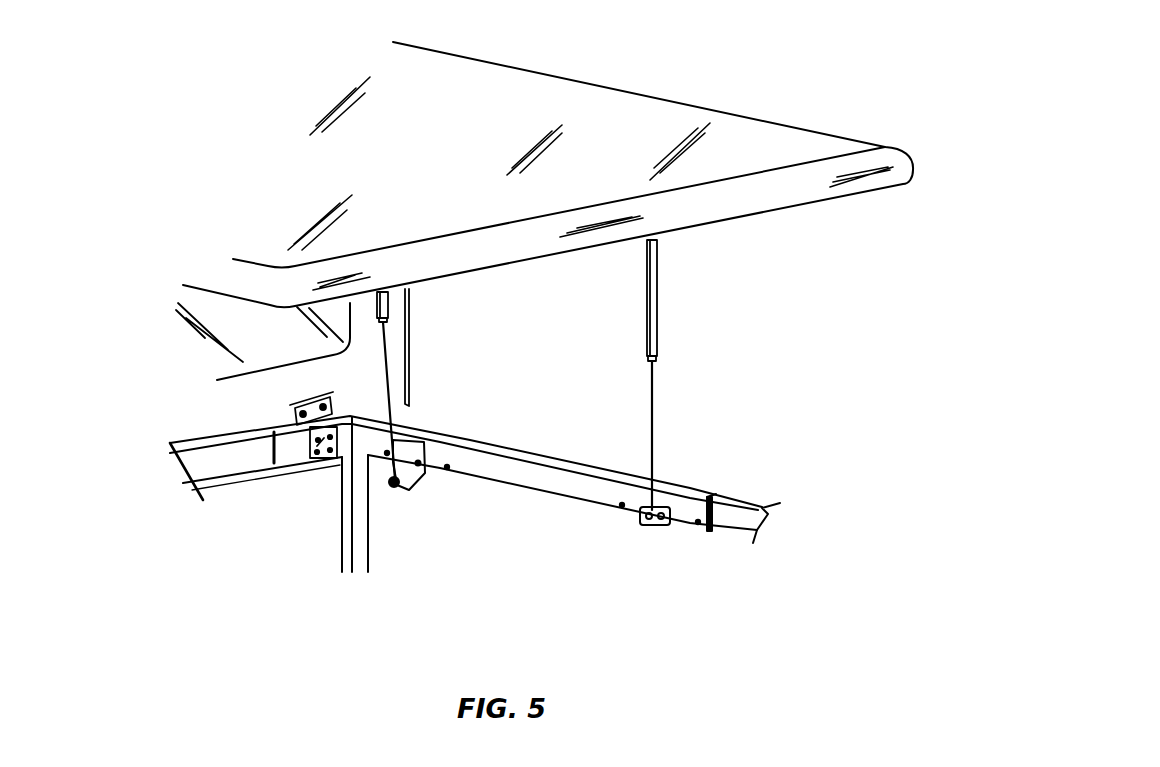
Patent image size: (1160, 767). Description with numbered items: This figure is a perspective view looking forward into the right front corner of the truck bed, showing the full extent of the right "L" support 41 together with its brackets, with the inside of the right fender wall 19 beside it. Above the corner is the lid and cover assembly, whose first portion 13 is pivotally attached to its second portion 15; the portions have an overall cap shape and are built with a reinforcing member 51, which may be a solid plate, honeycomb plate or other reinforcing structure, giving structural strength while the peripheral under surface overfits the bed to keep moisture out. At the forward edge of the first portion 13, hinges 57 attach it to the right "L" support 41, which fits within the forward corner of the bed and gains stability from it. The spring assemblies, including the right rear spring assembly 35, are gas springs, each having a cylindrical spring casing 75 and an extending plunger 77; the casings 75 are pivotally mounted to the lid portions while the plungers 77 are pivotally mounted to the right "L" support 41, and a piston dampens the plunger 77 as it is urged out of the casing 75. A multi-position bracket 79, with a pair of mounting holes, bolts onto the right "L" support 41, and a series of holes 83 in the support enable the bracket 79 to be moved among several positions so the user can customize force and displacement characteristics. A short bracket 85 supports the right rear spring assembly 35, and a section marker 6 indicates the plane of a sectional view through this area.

The second portion 15 is at (610, 98).
The reinforcing member 51 is at (268, 349).
The cylindrical spring casing 75 is at (402, 302).
The plunger 77 is at (392, 387).
The first portion 13 is at (398, 342).
The right rear spring assembly 35 is at (695, 332).
The right L support 41 is at (520, 450).
The hinges 57 is at (308, 455).
The multi-position bracket 79 is at (403, 443).
The holes 83 is at (387, 456).
The short bracket 85 is at (667, 523).
The right fender wall 19 is at (550, 523).
The section line 6- 6 is at (660, 467).